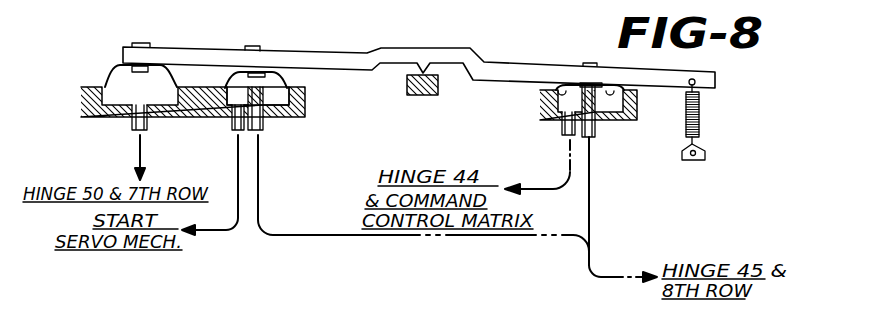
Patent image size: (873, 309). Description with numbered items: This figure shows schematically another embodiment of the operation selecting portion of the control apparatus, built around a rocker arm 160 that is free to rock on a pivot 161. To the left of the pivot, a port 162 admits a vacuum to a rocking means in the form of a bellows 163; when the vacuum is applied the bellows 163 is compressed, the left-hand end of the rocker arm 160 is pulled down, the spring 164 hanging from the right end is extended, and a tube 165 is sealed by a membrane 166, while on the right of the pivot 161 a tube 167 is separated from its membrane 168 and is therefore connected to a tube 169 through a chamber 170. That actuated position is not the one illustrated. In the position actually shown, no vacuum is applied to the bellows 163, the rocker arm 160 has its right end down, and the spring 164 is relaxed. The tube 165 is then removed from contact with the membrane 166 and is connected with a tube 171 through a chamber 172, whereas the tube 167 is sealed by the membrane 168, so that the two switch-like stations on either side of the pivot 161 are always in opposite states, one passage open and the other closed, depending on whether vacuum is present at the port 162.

The rocker arm 160 is at (330, 56).
The pivot 161 is at (418, 95).
The port 162 is at (137, 125).
The bellows 163 is at (115, 81).
The spring 164 is at (700, 124).
The tube 165 is at (262, 125).
The membrane 166 is at (263, 78).
The tube 167 is at (595, 135).
The membrane 168 is at (573, 91).
The tube 169 is at (568, 127).
The chamber 170 is at (612, 105).
The tube 171 is at (233, 125).
The chamber 172 is at (231, 92).